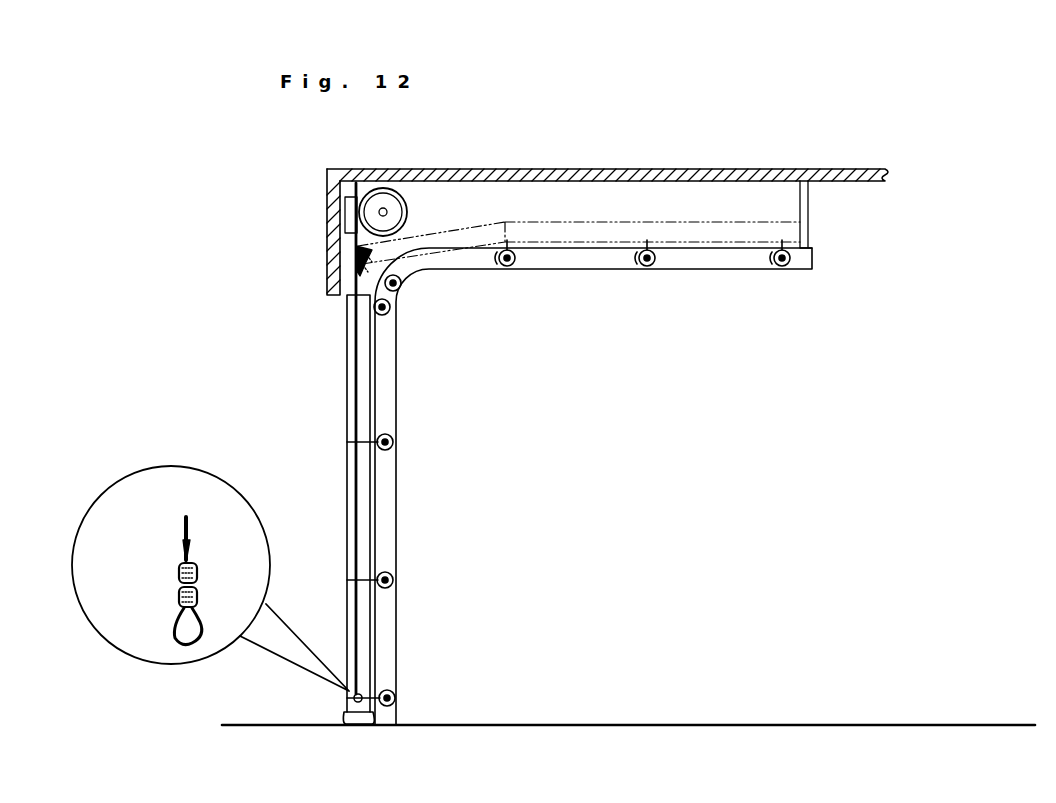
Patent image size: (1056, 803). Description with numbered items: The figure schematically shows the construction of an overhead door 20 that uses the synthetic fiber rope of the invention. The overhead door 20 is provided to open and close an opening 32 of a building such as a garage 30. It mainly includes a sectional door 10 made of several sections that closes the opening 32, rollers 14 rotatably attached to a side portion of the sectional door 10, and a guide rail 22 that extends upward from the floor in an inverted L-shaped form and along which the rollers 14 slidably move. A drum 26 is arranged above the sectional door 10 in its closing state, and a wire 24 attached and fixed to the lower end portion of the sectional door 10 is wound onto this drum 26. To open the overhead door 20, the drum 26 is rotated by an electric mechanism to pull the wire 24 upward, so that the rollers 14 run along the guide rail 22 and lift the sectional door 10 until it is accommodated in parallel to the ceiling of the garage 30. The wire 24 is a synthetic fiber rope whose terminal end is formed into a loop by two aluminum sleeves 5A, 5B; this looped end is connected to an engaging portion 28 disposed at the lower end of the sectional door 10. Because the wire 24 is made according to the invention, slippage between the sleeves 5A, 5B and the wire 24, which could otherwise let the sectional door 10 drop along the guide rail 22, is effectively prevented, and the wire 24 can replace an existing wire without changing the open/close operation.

The sectional door 10 is at (284, 509).
The rollers 14 is at (394, 437).
The overhead door 20 is at (337, 428).
The guide rail 22 is at (392, 545).
The wire 24 is at (360, 260).
The drum 26 is at (408, 206).
The engaging portion 28 is at (354, 698).
The garage 30 is at (672, 141).
The opening 32 is at (322, 310).
The sleeve 5A is at (179, 595).
The sleeve 5B is at (179, 578).